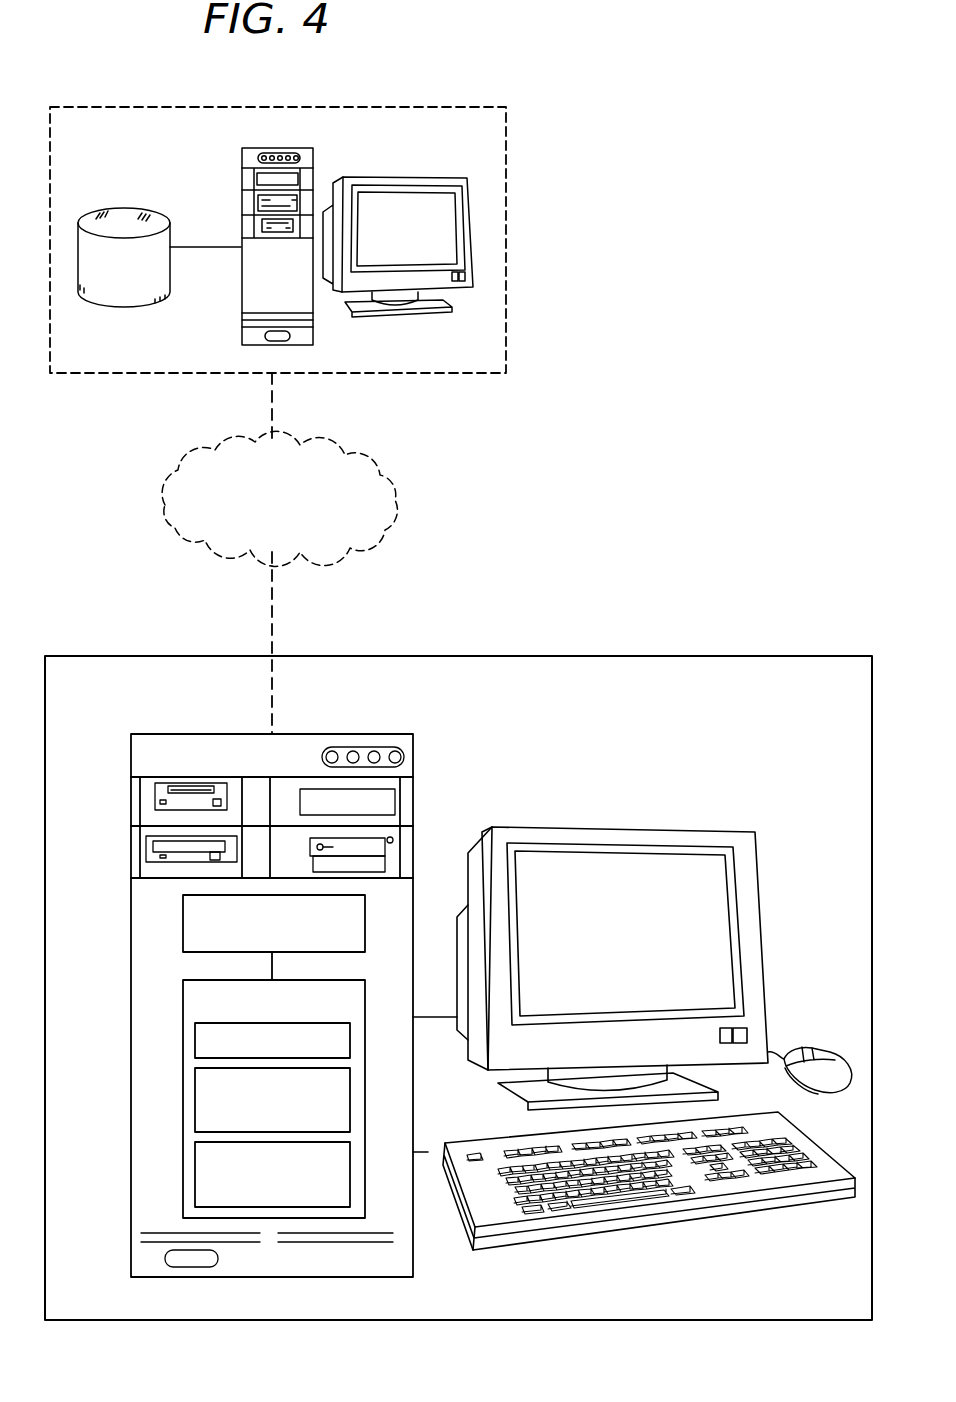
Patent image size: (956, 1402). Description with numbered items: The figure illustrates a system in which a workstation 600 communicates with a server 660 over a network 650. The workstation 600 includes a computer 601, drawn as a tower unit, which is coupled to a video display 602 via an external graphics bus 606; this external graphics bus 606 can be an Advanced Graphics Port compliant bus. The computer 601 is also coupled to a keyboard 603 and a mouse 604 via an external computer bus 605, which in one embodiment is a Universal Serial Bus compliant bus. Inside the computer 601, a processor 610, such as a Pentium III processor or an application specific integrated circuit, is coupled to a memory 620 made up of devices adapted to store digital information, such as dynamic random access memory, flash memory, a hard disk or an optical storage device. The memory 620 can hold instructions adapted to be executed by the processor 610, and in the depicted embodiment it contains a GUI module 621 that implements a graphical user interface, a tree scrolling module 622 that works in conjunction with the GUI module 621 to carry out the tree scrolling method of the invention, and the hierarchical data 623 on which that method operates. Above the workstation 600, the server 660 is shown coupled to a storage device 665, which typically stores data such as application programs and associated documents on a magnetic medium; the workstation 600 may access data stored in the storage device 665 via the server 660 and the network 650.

The workstation 600 is at (750, 656).
The computer 601 is at (208, 740).
The video display 602 is at (608, 820).
The keyboard 603 is at (687, 1213).
The mouse 604 is at (830, 1048).
The external computer bus 605 is at (428, 1152).
The external graphics bus 606 is at (427, 1017).
The processor 610 is at (183, 921).
The memory 620 is at (183, 996).
The GUI module 621 is at (195, 1038).
The tree scrolling module 622 is at (195, 1097).
The hierarchical data 623 is at (195, 1172).
The network 650 is at (180, 478).
The server 660 is at (278, 217).
The storage device 665 is at (130, 218).